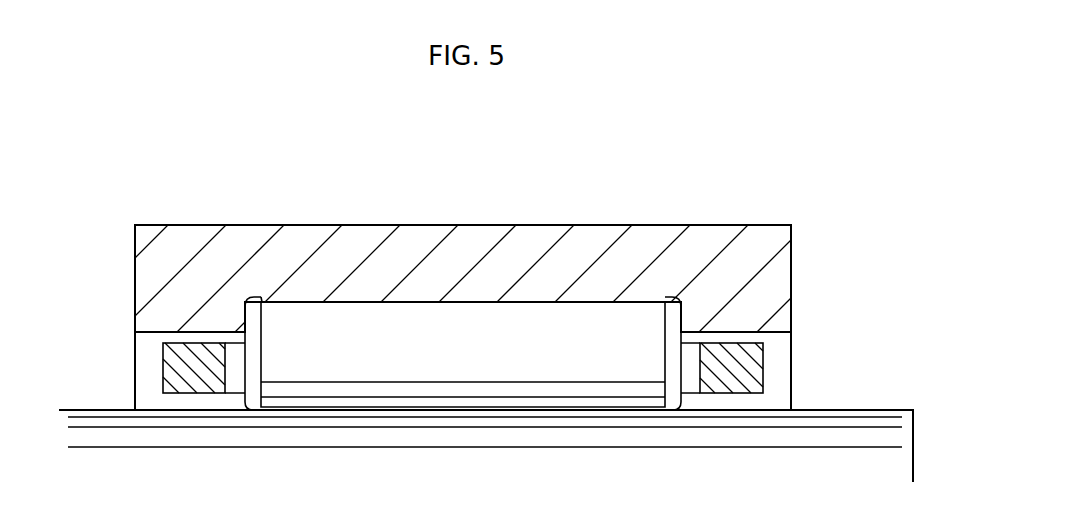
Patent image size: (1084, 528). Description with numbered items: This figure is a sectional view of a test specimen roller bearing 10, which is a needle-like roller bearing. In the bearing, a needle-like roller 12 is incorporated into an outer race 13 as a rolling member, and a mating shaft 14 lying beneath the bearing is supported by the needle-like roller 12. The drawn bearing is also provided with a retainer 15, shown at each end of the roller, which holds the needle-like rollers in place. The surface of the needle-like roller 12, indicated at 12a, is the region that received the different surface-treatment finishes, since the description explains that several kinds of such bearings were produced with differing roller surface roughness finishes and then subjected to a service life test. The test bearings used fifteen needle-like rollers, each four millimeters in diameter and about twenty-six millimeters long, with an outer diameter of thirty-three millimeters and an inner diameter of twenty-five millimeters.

The roller bearing 10 is at (648, 221).
The needle-like roller 12 is at (528, 330).
The roller outer surface 12a is at (423, 302).
The outer race 13 is at (305, 242).
The mating shaft 14 is at (850, 420).
The retainer 15 is at (180, 363).